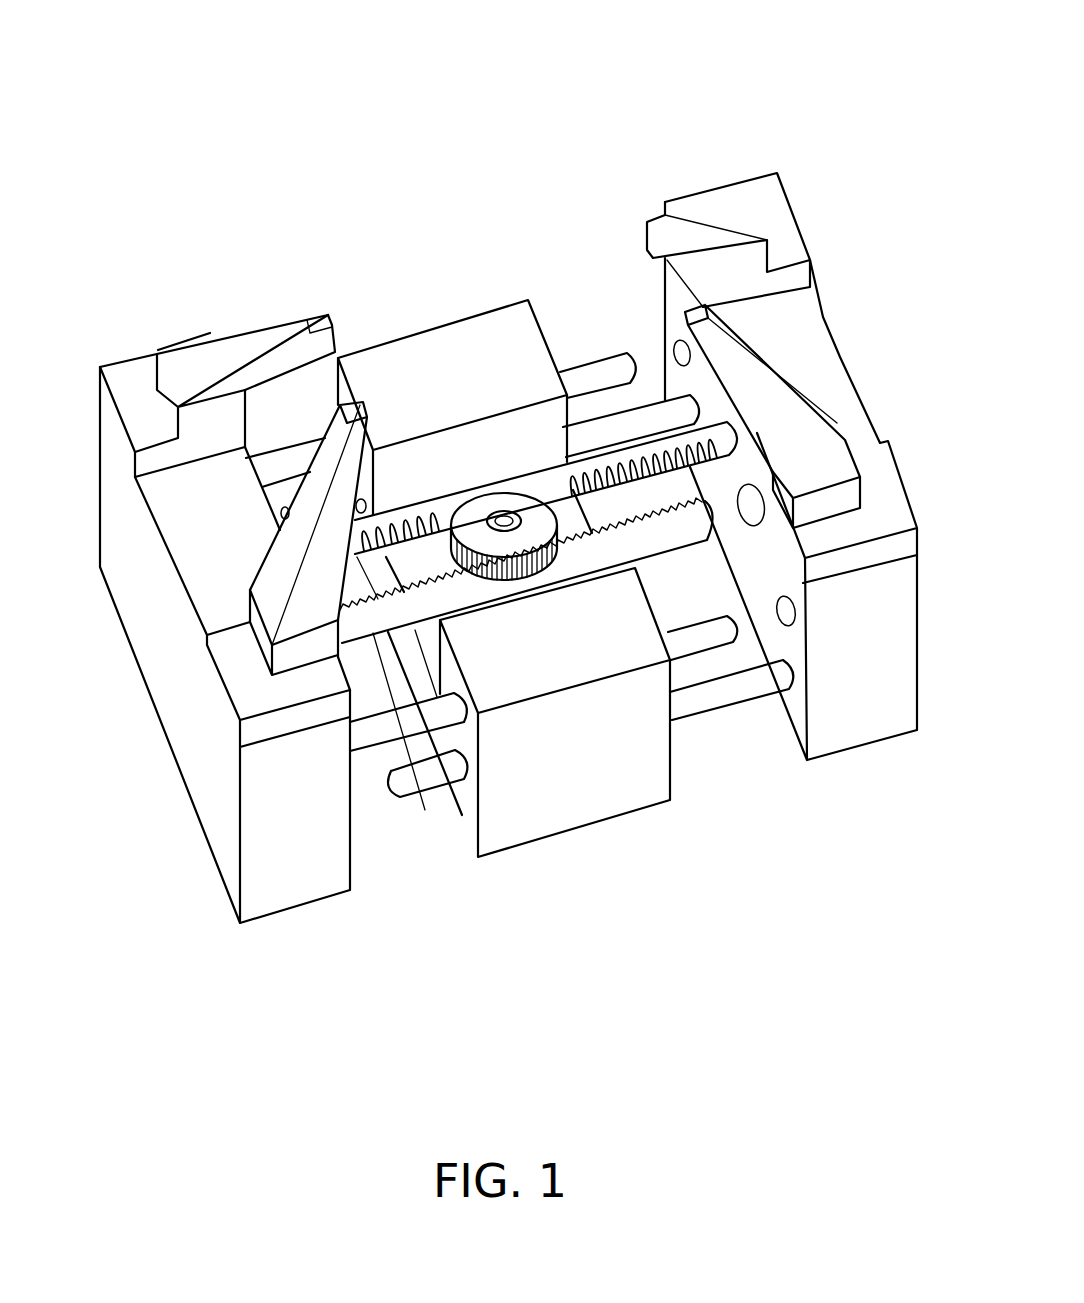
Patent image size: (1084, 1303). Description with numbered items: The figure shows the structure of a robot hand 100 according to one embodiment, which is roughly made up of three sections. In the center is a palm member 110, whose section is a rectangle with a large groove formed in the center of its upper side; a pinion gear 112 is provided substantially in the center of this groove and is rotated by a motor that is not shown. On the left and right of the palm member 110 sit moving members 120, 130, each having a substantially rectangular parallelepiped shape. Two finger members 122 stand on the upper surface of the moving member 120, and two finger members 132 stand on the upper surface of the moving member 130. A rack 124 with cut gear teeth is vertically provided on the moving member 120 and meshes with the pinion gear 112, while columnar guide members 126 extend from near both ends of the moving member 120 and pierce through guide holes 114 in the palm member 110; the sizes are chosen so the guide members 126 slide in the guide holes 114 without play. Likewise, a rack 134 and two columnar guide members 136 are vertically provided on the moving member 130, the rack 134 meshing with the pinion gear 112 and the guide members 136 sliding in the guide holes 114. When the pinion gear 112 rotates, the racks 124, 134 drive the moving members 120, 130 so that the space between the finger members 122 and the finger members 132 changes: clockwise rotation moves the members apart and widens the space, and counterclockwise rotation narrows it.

The robot hand 100 is at (363, 113).
The palm member 110 is at (633, 810).
The pinion gear 112 is at (490, 462).
The guide holes 114 is at (472, 715).
The moving member 120 is at (293, 913).
The finger members 122 is at (267, 550).
The rack 124 is at (380, 637).
The guide members 126 is at (302, 445).
The moving member 130 is at (883, 743).
The finger members 132 is at (757, 208).
The rack 134 is at (541, 420).
The guide members 136 is at (612, 418).